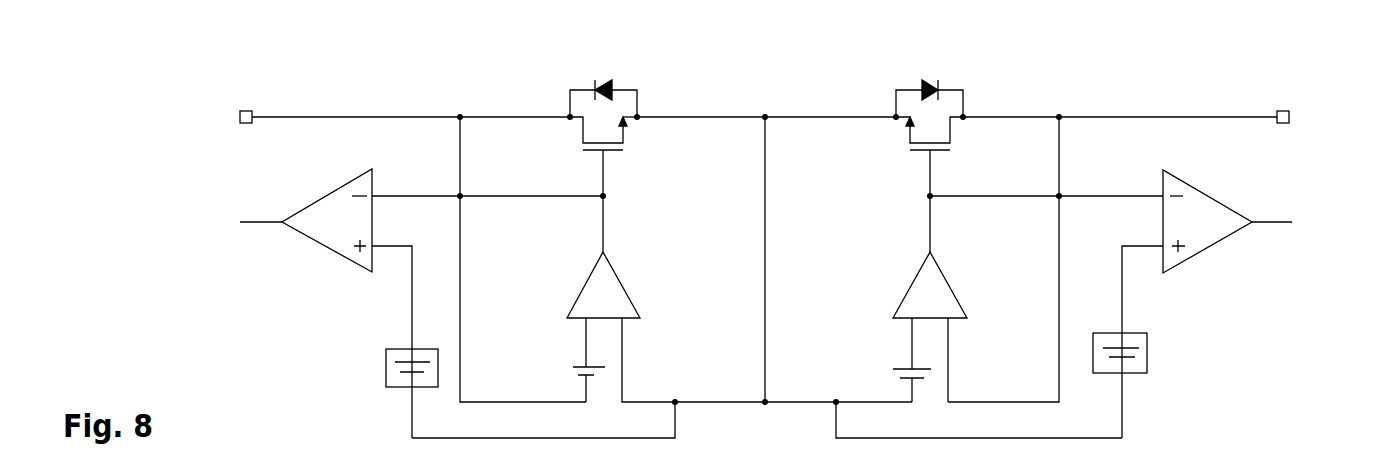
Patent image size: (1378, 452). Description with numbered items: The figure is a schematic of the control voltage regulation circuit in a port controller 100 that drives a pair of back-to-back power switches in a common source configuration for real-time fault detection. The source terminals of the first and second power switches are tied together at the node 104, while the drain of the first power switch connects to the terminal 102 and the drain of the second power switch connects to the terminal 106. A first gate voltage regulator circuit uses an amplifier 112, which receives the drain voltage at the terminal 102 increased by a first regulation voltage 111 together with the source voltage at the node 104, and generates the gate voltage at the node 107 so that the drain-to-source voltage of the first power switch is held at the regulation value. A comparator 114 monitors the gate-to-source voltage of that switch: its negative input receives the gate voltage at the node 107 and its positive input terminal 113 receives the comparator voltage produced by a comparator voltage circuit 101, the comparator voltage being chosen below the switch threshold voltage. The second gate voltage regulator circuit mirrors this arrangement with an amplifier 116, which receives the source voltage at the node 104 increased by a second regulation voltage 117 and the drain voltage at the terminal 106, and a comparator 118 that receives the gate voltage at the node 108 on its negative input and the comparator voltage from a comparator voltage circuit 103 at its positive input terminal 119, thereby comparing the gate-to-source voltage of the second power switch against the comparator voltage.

The port controller 100 is at (1182, 49).
The comparator voltage circuit 101 is at (395, 388).
The terminal 102 is at (520, 116).
The comparator voltage circuit 103 is at (1128, 374).
The node 104 is at (785, 116).
The terminal 106 is at (1030, 116).
The node 107 is at (604, 211).
The node 108 is at (931, 178).
The first regulated voltage source VREG1 111 is at (585, 337).
The amplifier 112 is at (622, 280).
The first comparator non-inverting input node 113 is at (411, 293).
The comparator 114 is at (318, 250).
The amplifier 116 is at (950, 272).
The second regulated voltage source VREG2 117 is at (911, 337).
The comparator 118 is at (1212, 250).
The positive input terminal 119 is at (1121, 288).